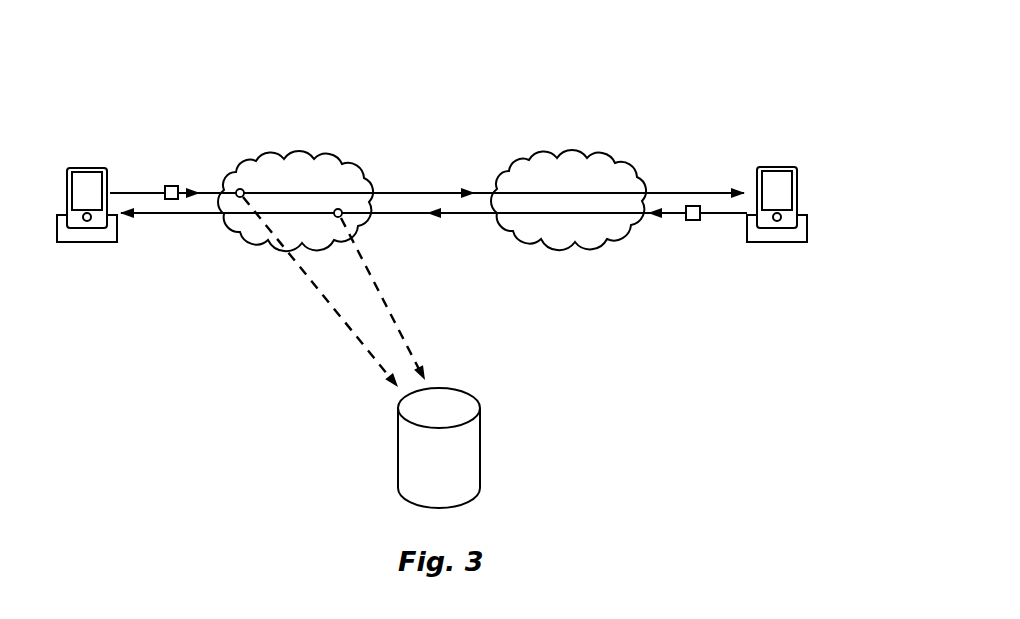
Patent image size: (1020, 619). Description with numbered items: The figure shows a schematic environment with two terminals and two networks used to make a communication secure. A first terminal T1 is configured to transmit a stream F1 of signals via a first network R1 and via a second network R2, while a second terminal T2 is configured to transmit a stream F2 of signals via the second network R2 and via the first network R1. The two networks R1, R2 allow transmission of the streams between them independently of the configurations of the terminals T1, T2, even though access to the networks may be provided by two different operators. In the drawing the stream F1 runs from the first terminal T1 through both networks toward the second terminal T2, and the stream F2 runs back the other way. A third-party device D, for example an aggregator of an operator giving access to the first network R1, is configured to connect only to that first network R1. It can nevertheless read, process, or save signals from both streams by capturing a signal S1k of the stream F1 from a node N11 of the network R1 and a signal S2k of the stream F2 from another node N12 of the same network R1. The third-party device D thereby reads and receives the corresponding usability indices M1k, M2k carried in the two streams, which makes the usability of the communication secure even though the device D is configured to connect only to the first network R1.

The first terminal T1 is at (80, 152).
The second terminal T2 is at (792, 144).
The stream F1 is at (117, 192).
The stream F2 is at (717, 215).
The usability index M1k is at (173, 186).
The usability index M2k is at (693, 220).
The first network R1 is at (316, 134).
The second network R2 is at (582, 132).
The node N11 is at (240, 188).
The node N12 is at (338, 208).
The signal S1k is at (323, 295).
The signal S2k is at (362, 253).
The third-party device D is at (498, 442).